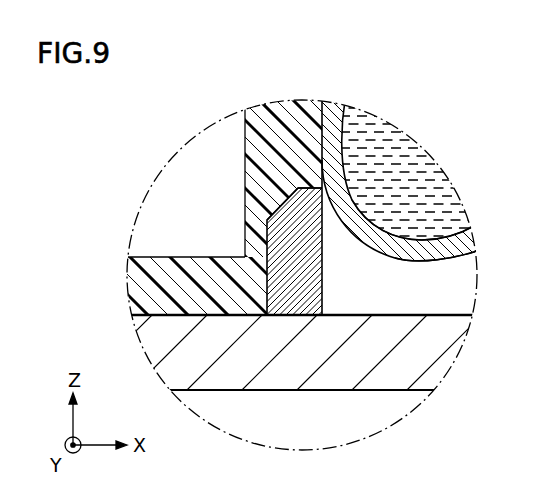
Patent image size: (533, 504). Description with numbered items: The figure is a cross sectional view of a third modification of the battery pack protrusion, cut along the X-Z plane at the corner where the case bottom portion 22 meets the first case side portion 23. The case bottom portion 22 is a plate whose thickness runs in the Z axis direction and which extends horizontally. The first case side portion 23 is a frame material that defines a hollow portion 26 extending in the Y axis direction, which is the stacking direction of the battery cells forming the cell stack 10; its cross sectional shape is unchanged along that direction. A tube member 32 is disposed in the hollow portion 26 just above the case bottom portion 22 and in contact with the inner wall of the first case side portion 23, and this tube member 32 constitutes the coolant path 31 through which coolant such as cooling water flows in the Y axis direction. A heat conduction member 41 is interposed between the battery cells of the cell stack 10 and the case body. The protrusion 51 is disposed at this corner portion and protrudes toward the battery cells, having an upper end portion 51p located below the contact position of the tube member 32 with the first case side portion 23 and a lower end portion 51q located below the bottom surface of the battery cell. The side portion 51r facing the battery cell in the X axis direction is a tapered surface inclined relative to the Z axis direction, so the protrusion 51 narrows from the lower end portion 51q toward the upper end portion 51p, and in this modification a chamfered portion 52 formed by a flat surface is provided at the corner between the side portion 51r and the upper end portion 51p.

The cell stack 10 is at (190, 172).
The case bottom portion 22 is at (347, 362).
The first case side portion 23 is at (311, 103).
The hollow portion 26 is at (418, 277).
The coolant path 31 is at (422, 170).
The tube member 32 is at (453, 242).
The heat conduction member 41 is at (145, 286).
The protrusion 51 is at (336, 285).
The upper end portion 51p is at (307, 187).
The lower end portion 51q is at (297, 318).
The side portion 51r is at (262, 232).
The chamfered portion 52 is at (282, 185).